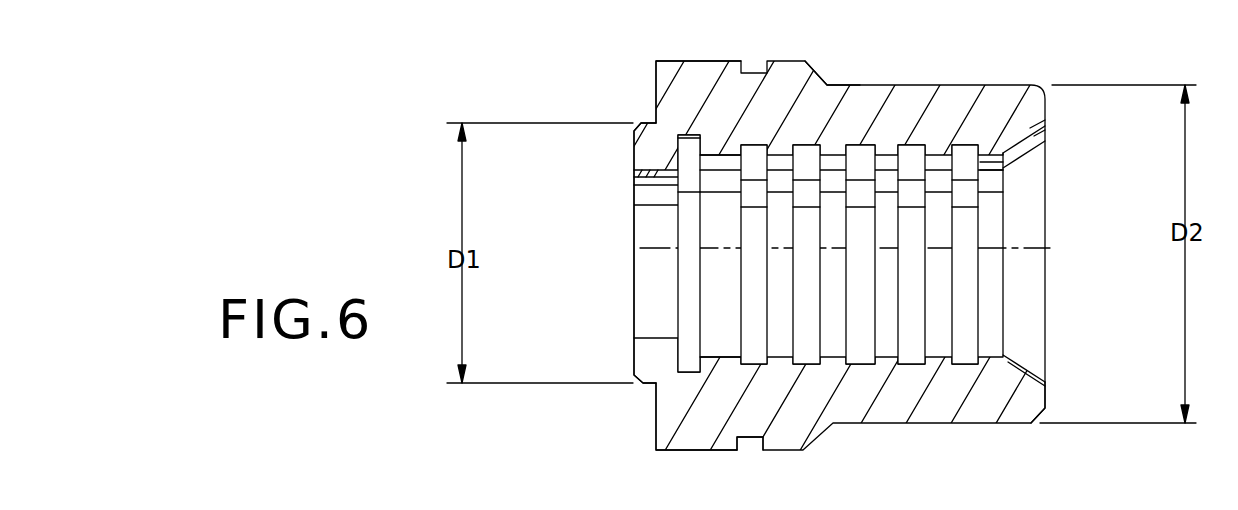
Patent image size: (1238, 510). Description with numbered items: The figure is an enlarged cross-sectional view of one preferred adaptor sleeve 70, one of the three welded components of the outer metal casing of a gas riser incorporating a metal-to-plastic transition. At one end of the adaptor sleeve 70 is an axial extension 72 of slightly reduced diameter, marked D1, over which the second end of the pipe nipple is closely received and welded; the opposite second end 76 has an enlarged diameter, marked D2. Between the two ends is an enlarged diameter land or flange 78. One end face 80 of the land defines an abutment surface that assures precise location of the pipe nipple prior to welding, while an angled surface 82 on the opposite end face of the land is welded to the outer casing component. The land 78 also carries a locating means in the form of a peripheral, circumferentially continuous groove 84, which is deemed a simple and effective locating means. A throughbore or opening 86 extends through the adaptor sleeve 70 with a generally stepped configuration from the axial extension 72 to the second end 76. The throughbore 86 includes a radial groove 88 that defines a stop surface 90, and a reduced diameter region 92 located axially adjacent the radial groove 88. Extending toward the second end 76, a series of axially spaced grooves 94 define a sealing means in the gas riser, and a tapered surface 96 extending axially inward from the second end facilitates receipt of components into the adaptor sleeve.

The adaptor sleeve 70 is at (1000, 82).
The axial extension 72 is at (637, 380).
The second end 76 is at (1046, 352).
The land 78 is at (715, 452).
The end face 80 is at (656, 72).
The angled surface 82 is at (826, 84).
The groove 84 is at (751, 438).
The throughbore 86 is at (637, 178).
The radial groove 88 is at (648, 227).
The stop surface 90 is at (668, 281).
The reduced diameter region 92 is at (718, 345).
The axially spaced grooves 94 is at (858, 358).
The bore end portion 96 is at (1020, 288).